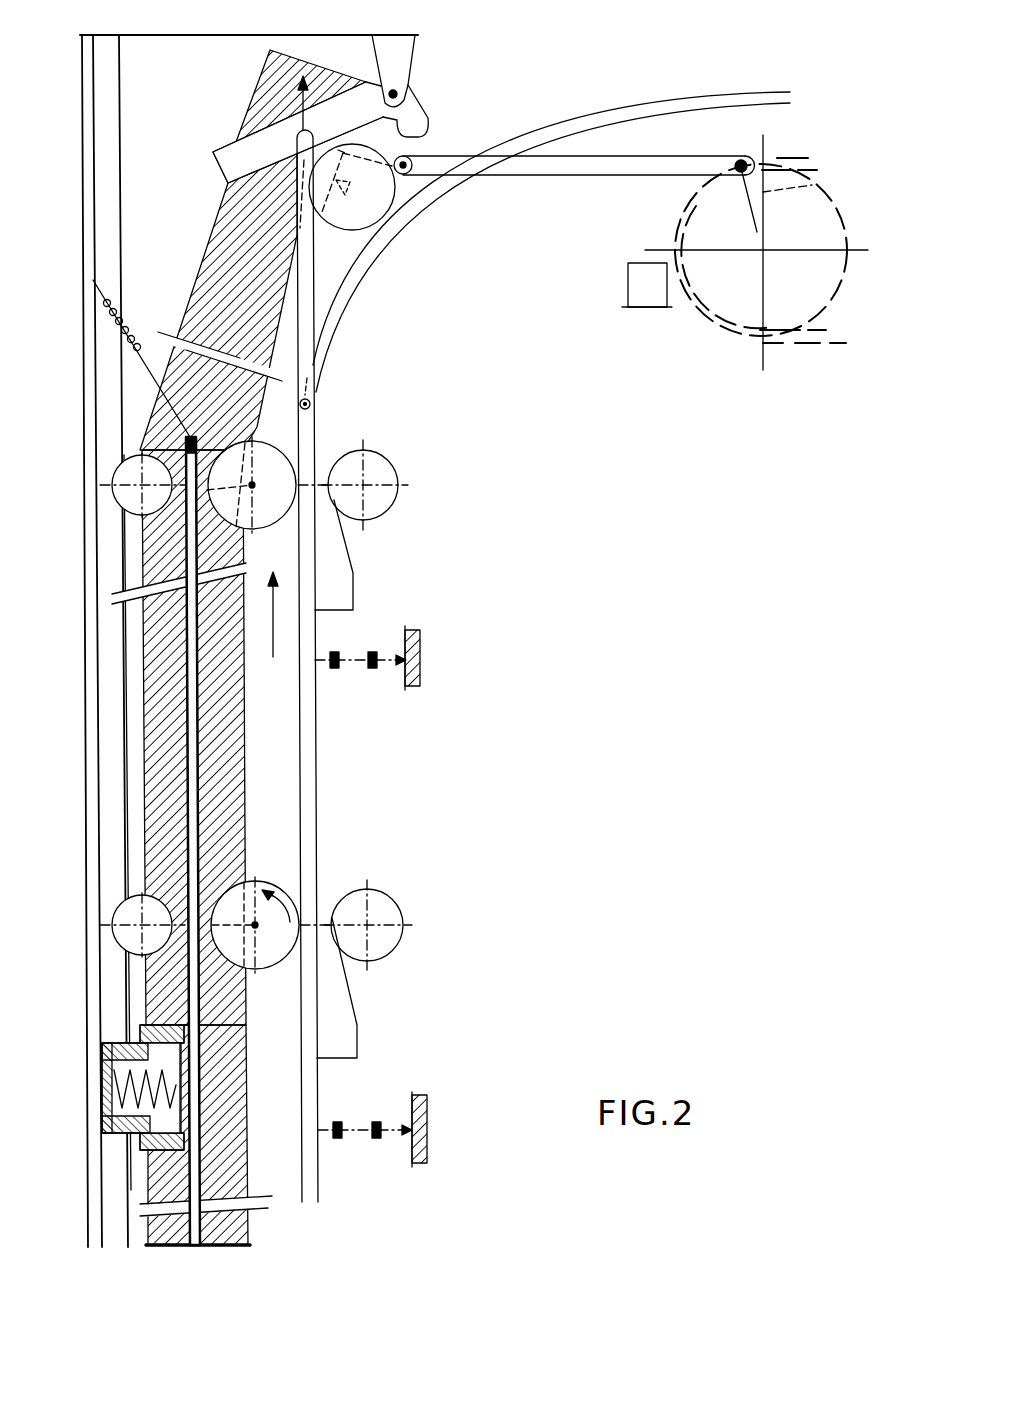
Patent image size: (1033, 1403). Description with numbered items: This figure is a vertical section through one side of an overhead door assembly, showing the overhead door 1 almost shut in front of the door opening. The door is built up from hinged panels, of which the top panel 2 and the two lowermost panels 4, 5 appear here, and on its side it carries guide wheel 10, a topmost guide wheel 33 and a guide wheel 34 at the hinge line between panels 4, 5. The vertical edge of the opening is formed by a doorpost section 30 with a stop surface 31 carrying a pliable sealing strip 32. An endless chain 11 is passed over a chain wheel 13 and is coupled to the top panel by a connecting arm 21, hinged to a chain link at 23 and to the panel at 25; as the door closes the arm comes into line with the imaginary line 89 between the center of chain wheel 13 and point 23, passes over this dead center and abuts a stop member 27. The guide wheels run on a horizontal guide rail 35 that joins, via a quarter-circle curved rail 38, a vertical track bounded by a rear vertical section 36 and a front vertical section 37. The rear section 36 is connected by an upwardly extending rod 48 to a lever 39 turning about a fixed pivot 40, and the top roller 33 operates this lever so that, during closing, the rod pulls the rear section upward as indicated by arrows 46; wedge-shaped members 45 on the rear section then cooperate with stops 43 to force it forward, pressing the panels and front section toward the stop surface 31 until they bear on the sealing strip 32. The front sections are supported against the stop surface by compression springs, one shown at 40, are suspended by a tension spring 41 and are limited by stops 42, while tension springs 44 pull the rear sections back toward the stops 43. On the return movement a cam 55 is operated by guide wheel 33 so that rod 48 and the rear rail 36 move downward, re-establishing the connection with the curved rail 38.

The overhead door 1 is at (180, 260).
The top panel 2 is at (253, 106).
The door panel 4 is at (246, 698).
The bottom panel 5 is at (247, 1027).
The guide wheel 10 is at (280, 460).
The chain 11 is at (840, 158).
The chain wheel 13 is at (810, 229).
The connecting arm 21 is at (661, 158).
The hinge connection 23 is at (741, 160).
The hinge connection 25 is at (412, 160).
The stop member 27 is at (630, 308).
The doorpost section 30 is at (83, 225).
The stop surface 31 is at (104, 86).
The sealing strip 32 is at (118, 137).
The topmost guide wheel 33 is at (393, 186).
The guide wheel 34 is at (292, 893).
The horizontal guide rail 35 is at (755, 88).
The rear vertical section 36 is at (316, 750).
The front vertical section 37 is at (201, 798).
The curved rail 38 is at (400, 253).
The lever 39 is at (213, 165).
The fixed pivot / compression spring 40 is at (103, 1133).
The tension spring 41 is at (122, 332).
The stop 42 is at (116, 496).
The stop 43 is at (396, 502).
The tension spring 44 is at (376, 668).
The wedge-shaped member 45 is at (354, 593).
The arrow 46 is at (308, 100).
The rod 48 is at (312, 300).
The cam 55 is at (422, 116).
The imaginary line 89 is at (815, 187).